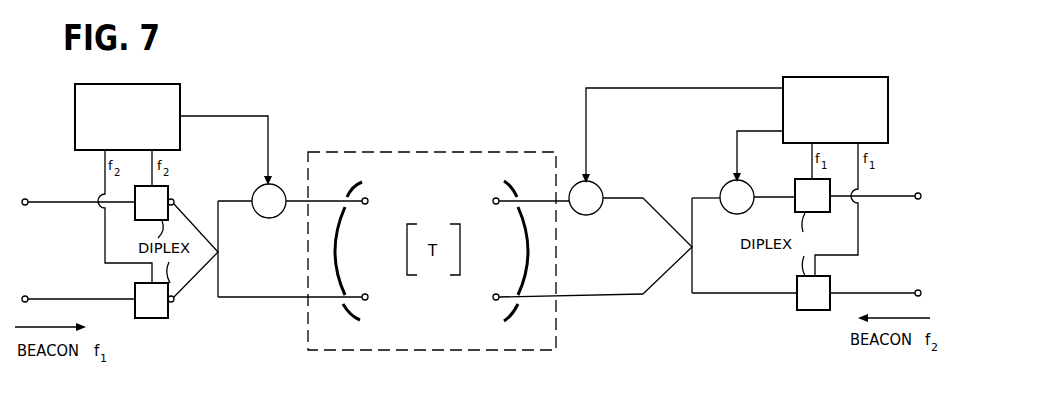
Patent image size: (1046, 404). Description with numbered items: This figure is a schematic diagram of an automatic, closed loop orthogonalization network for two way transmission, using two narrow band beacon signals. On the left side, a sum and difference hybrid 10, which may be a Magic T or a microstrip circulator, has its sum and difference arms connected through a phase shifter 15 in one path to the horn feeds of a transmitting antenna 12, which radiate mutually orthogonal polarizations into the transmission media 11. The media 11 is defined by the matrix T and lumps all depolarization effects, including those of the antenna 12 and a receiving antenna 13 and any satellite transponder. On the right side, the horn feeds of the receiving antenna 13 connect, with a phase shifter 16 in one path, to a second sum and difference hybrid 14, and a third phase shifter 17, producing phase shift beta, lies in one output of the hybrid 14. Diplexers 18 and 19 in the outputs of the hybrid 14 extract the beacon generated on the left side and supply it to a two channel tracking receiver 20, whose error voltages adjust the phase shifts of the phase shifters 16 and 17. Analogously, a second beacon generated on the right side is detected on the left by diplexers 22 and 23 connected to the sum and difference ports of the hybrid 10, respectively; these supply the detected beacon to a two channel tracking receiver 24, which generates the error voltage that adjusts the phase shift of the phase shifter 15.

The sum and difference hybrid 10 is at (205, 293).
The transmission media 11 is at (490, 152).
The transmitting antenna 12 is at (366, 197).
The receiving antenna 13 is at (503, 182).
The sum and difference hybrid 14 is at (677, 287).
The phase shifter 15 is at (275, 218).
The phase shifter 16 is at (580, 215).
The phase shifter 17 is at (726, 211).
The diplexer 18 is at (840, 270).
The diplexer 19 is at (826, 213).
The two channel tracking receiver 20 is at (865, 77).
The diplexer 22 is at (135, 292).
The diplexer 23 is at (135, 212).
The two channel tracking receiver 24 is at (178, 84).